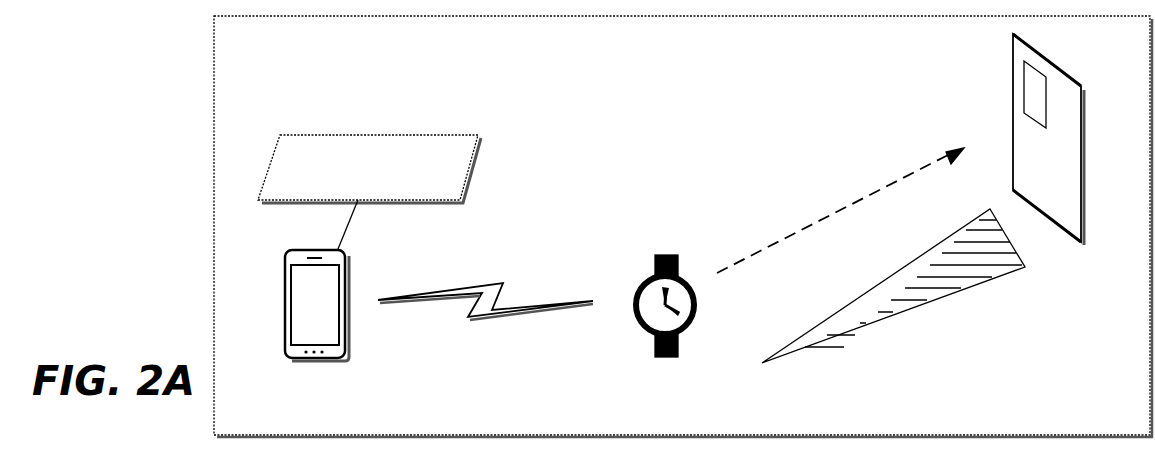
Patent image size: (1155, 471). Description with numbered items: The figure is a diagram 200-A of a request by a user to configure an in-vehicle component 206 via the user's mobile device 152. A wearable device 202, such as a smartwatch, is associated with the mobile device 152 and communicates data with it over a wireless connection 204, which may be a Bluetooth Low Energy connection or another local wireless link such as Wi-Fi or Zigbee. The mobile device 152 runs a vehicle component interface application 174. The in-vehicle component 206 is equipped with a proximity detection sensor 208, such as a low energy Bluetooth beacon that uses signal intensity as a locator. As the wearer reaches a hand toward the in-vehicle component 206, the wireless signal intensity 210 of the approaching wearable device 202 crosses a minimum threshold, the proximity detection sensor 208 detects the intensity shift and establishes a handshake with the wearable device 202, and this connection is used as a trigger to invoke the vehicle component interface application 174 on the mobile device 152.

The diagram 200-A is at (172, 56).
The vehicle component interface application 174 is at (392, 135).
The mobile device 152 is at (282, 268).
The wireless connection 204 is at (457, 286).
The wearable device 202 is at (652, 268).
The in-vehicle component 206 is at (1012, 70).
The proximity detection sensor 208 is at (1024, 92).
The wireless signal intensity 210 is at (918, 306).